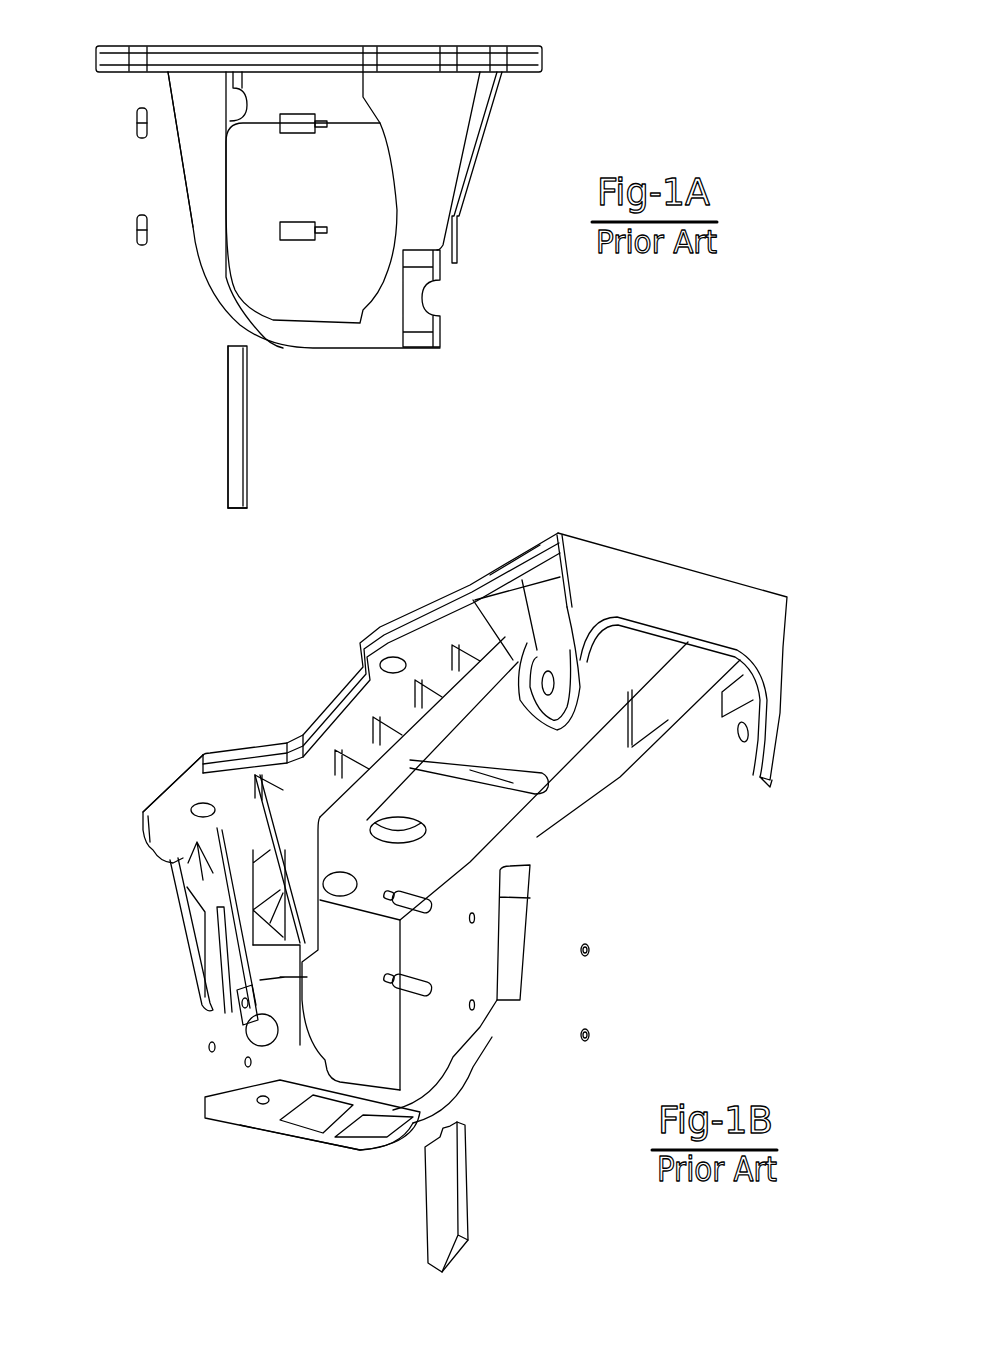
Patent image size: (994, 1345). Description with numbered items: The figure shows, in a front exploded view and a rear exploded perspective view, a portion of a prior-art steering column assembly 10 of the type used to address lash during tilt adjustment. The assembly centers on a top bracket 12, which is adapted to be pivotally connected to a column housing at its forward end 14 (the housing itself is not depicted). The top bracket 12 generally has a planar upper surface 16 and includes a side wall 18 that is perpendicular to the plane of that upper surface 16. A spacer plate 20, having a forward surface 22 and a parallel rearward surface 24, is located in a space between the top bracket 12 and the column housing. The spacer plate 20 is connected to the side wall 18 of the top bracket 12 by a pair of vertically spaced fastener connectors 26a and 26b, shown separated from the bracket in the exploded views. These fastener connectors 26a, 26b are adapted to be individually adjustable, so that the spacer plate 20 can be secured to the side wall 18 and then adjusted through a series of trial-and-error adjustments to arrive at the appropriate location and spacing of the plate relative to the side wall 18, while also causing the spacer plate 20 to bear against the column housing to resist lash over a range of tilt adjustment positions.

In FIG. 1A, the steering column assembly 10 is at (500, 307).
In FIG. 1B, the steering column assembly 10 is at (137, 1013).
In FIG. 1A, the top bracket 12 is at (447, 113).
In FIG. 1B, the top bracket 12 is at (617, 792).
In FIG. 1B, the forward end 14 is at (700, 590).
In FIG. 1A, the planar upper surface 16 is at (272, 47).
In FIG. 1B, the planar upper surface 16 is at (327, 713).
In FIG. 1B, the side wall 18 is at (483, 972).
In FIG. 1A, the spacer plate 20 is at (237, 510).
In FIG. 1B, the spacer plate 20 is at (468, 1200).
In FIG. 1A, the forward surface 22 is at (247, 422).
In FIG. 1A, the rearward surface 24 is at (227, 407).
In FIG. 1A, the fastener connector 26a is at (307, 222).
In FIG. 1B, the fastener connector 26a is at (420, 980).
In FIG. 1A, the fastener connector 26b is at (142, 215).
In FIG. 1B, the fastener connector 26b is at (593, 1028).